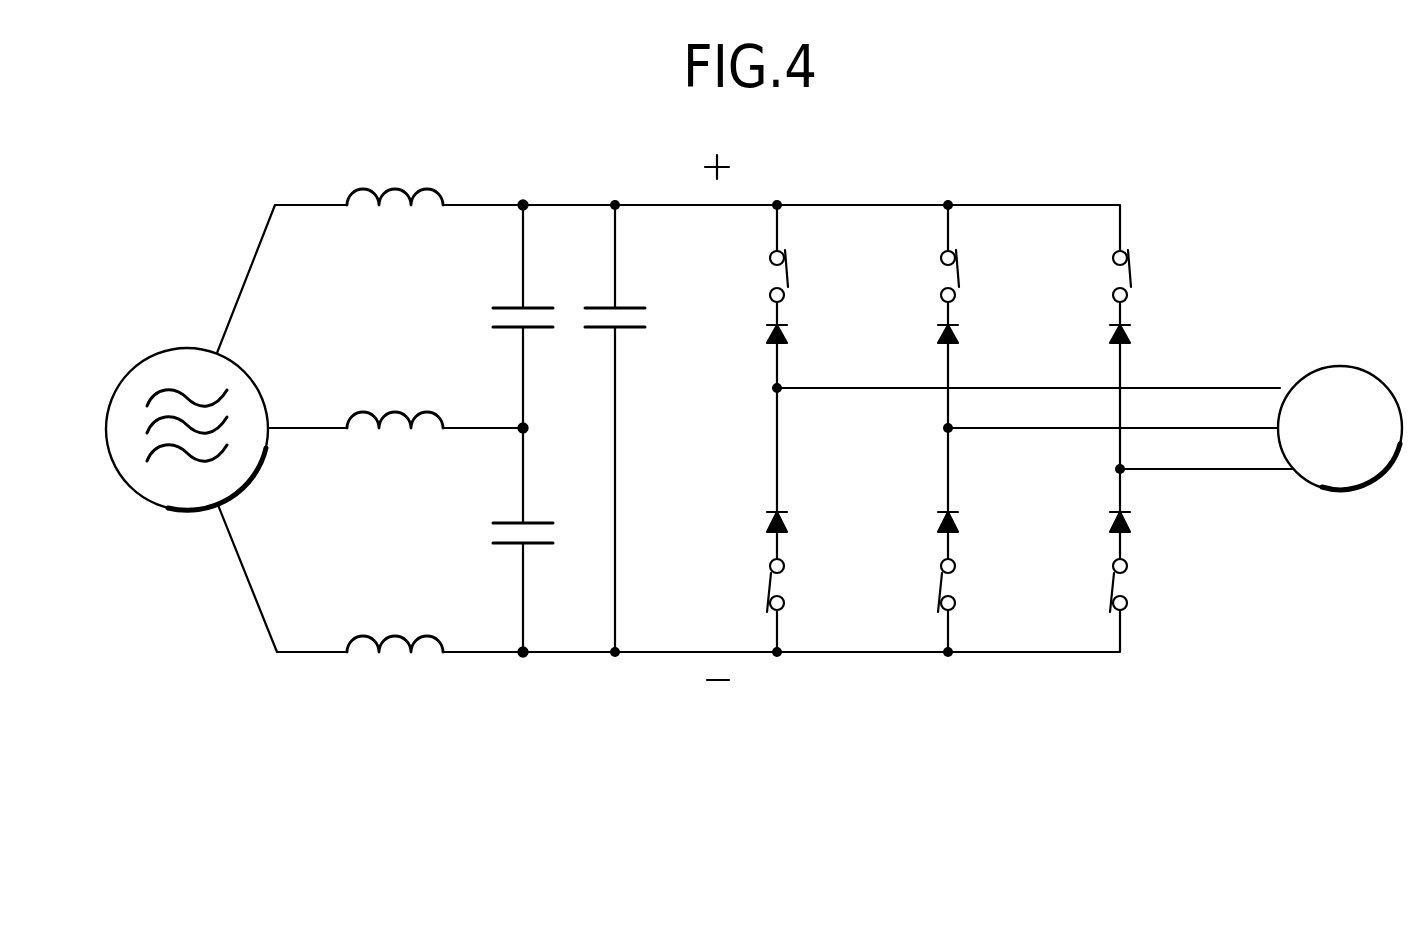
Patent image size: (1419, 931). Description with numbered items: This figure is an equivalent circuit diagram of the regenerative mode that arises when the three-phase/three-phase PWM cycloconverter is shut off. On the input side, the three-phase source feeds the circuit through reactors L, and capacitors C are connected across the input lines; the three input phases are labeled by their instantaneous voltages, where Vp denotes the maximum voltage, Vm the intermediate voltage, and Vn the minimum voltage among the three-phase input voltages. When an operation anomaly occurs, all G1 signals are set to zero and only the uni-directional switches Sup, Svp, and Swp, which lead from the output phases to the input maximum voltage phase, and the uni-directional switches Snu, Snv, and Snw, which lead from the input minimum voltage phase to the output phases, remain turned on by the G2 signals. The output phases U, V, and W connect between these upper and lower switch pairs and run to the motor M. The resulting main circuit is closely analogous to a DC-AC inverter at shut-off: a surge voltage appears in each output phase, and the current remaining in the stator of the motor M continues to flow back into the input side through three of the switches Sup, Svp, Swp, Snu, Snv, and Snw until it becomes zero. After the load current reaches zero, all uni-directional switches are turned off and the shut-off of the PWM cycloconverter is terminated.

The reactor (inductor) L is at (395, 404).
The capacitor C is at (574, 405).
The maximum voltage Vp is at (500, 184).
The intermediate voltage Vm is at (500, 408).
The minimum voltage Vn is at (500, 634).
The uni-directional switch Sup is at (814, 296).
The uni-directional switch Svp is at (980, 296).
The uni-directional switch Swp is at (1153, 296).
The uni-directional switch Snu is at (814, 562).
The uni-directional switch Snv is at (981, 562).
The uni-directional switch Snw is at (1153, 562).
The U phase output line U is at (1247, 388).
The V phase output line V is at (1197, 428).
The W phase output line W is at (1227, 469).
The motor M is at (1340, 428).